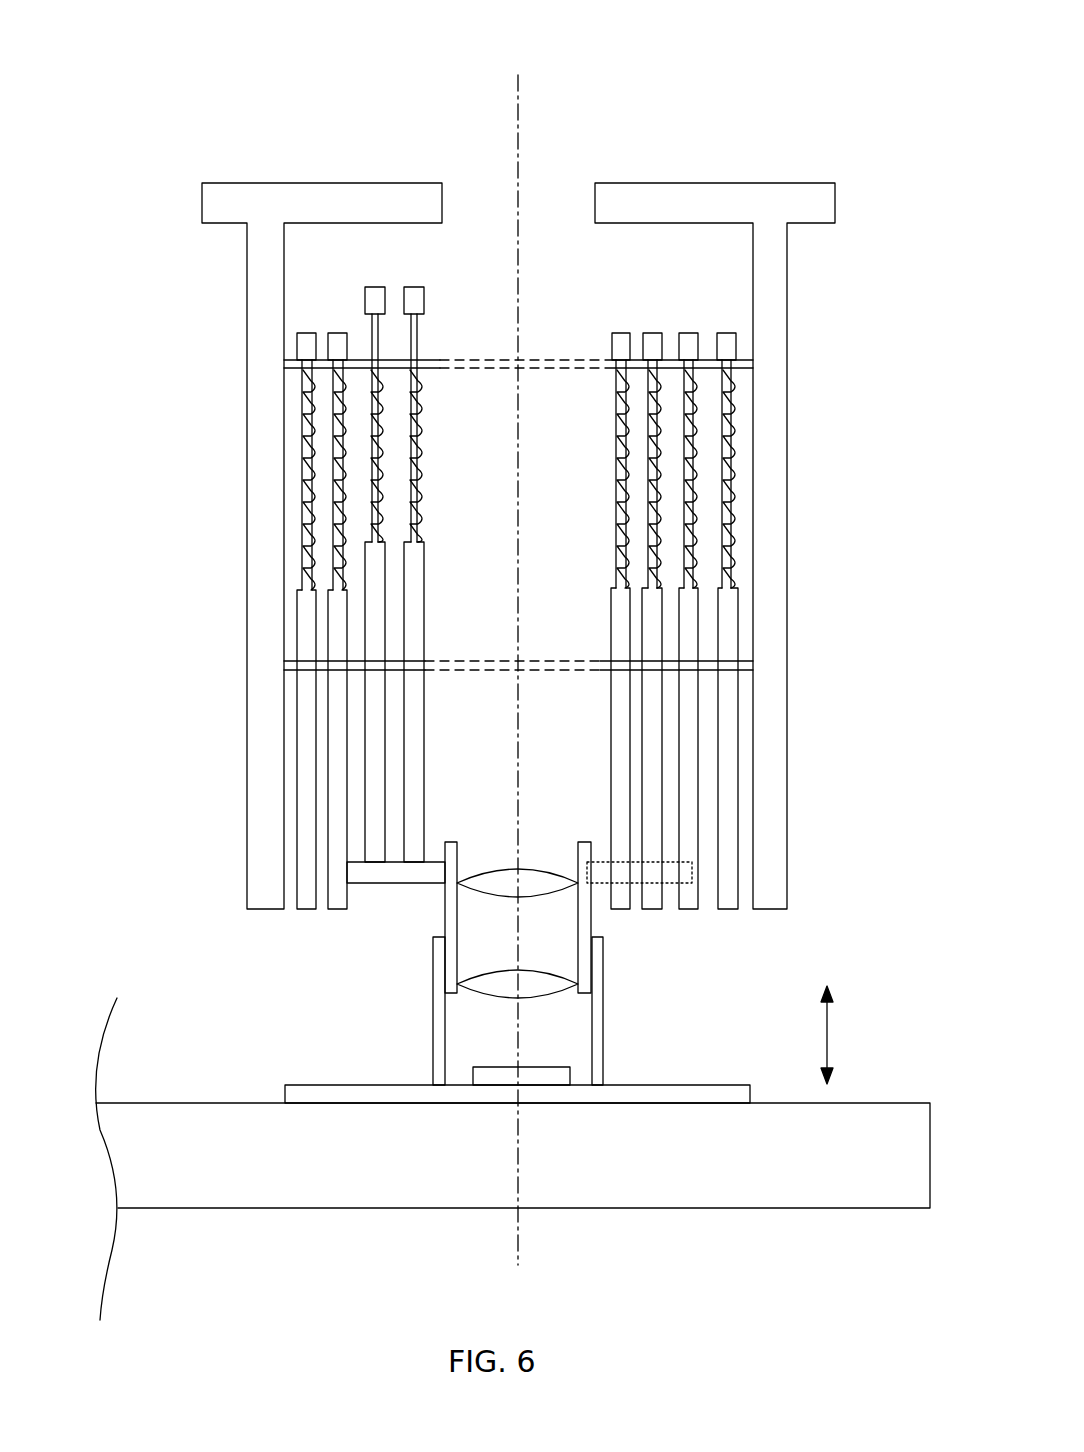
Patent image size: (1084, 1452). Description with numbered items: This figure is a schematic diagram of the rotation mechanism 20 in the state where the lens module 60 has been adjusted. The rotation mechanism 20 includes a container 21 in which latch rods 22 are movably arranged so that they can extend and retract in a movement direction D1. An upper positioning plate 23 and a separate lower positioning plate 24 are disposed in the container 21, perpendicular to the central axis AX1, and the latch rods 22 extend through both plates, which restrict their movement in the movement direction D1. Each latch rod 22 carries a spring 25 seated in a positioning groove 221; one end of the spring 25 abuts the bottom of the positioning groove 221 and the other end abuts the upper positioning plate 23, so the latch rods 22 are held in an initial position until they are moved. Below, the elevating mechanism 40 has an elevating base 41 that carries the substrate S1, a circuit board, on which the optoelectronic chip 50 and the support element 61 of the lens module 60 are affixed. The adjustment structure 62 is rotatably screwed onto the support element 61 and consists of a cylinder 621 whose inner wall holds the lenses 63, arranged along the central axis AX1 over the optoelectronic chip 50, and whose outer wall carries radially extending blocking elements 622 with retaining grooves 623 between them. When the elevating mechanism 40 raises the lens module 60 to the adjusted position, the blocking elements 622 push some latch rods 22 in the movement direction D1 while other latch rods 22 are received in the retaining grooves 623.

The rotation mechanism 20 is at (731, 122).
The container 21 is at (224, 196).
The latch rods 22 is at (315, 322).
The upper positioning plate 23 is at (302, 373).
The lower positioning plate 24 is at (286, 671).
The springs 25 is at (838, 492).
The positioning groove 221 is at (297, 591).
The adjustment structure 62 is at (450, 829).
The blocking elements 622 is at (405, 872).
The cylinder 621 is at (582, 926).
The retaining grooves 623 is at (666, 883).
The lenses 63 is at (540, 987).
The support element 61 is at (433, 1046).
The lens module 60 is at (376, 1063).
The optoelectronic chip 50 is at (545, 1075).
The elevating base 41 is at (360, 1221).
The elevating mechanism 40 is at (513, 1159).
The substrate S1 is at (723, 1098).
The movement direction D1 is at (851, 1035).
The central axis AX1 is at (521, 117).